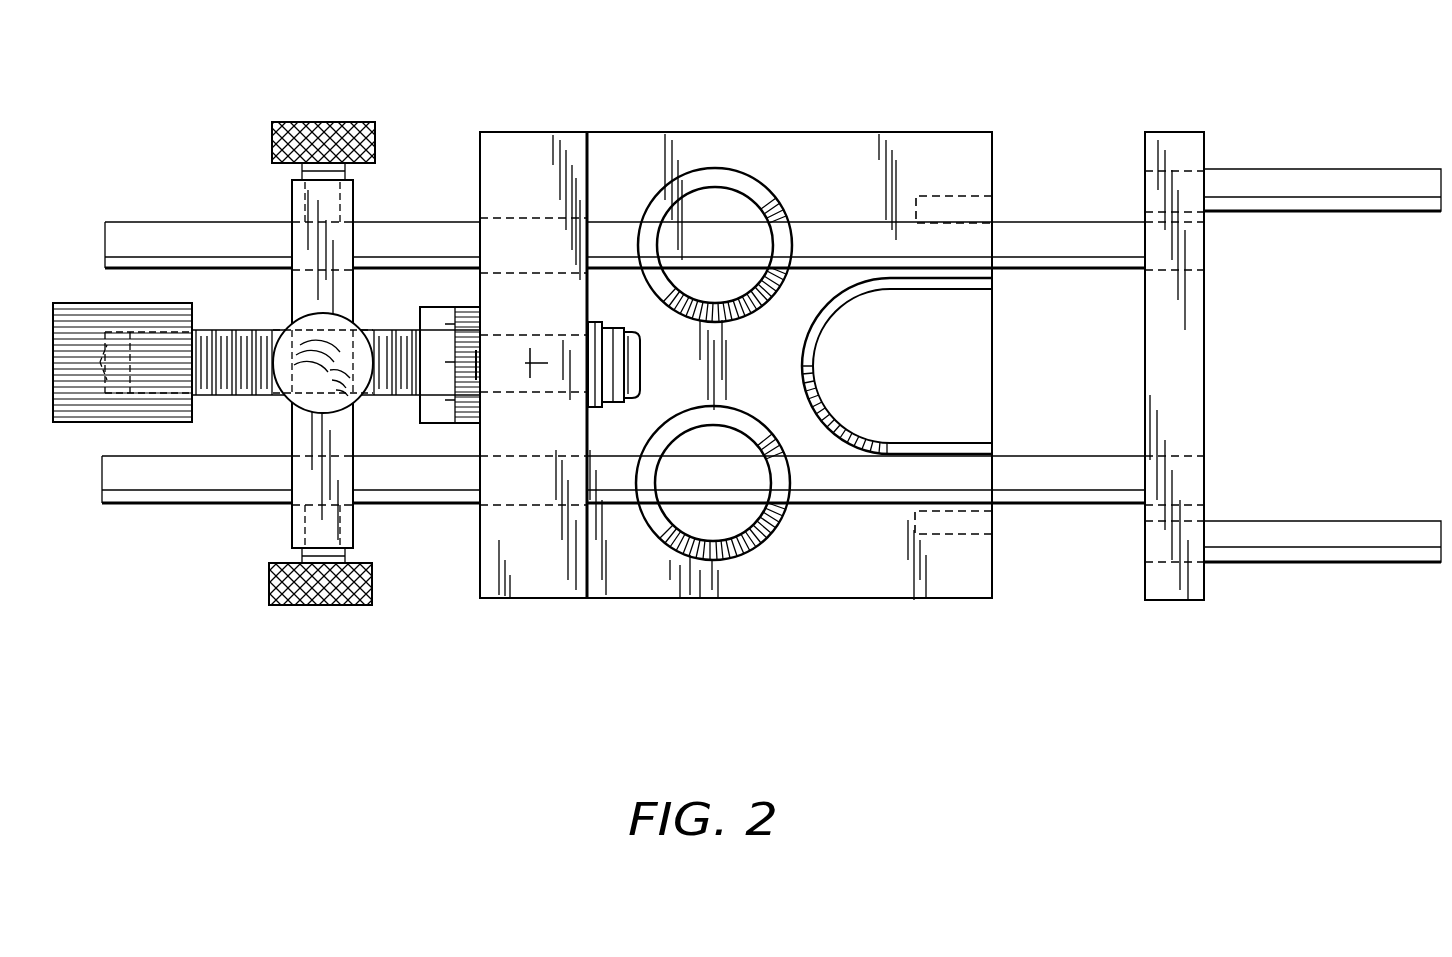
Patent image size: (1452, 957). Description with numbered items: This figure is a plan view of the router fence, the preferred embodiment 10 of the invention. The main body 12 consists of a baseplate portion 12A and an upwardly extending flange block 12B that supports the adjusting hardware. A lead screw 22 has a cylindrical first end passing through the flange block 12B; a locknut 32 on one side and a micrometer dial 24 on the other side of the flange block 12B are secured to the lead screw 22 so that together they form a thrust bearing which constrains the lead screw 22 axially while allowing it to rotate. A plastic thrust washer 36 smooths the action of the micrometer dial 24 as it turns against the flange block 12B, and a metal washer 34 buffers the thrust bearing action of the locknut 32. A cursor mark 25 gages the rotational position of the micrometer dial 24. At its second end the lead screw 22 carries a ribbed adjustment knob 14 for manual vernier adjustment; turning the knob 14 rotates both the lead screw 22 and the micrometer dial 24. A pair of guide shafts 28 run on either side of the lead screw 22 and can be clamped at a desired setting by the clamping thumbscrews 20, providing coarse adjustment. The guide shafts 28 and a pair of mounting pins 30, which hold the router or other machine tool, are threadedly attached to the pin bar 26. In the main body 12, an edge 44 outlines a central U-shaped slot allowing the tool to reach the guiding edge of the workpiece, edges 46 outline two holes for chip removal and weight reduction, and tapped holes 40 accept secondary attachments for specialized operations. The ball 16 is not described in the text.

The preferred embodiment 10 is at (147, 647).
The main body 12 is at (519, 640).
The baseplate portion 12A is at (693, 132).
The flange block 12B is at (533, 147).
The ribbed adjustment knob 14 is at (82, 302).
The ball 16 is at (357, 323).
The clamping thumbscrews 20 is at (338, 121).
The lead screw 22 is at (250, 328).
The micrometer dial 24 is at (437, 423).
The cursor mark 25 is at (478, 503).
The pin bar 26 is at (1183, 130).
The guide shafts 28 is at (140, 221).
The mounting pins 30 is at (1340, 170).
The locknut 32 is at (616, 406).
The metal washer 34 is at (586, 412).
The plastic thrust washer 36 is at (478, 302).
The tapped holes 40 is at (994, 205).
The edge 44 is at (845, 300).
The edges 46 is at (747, 177).